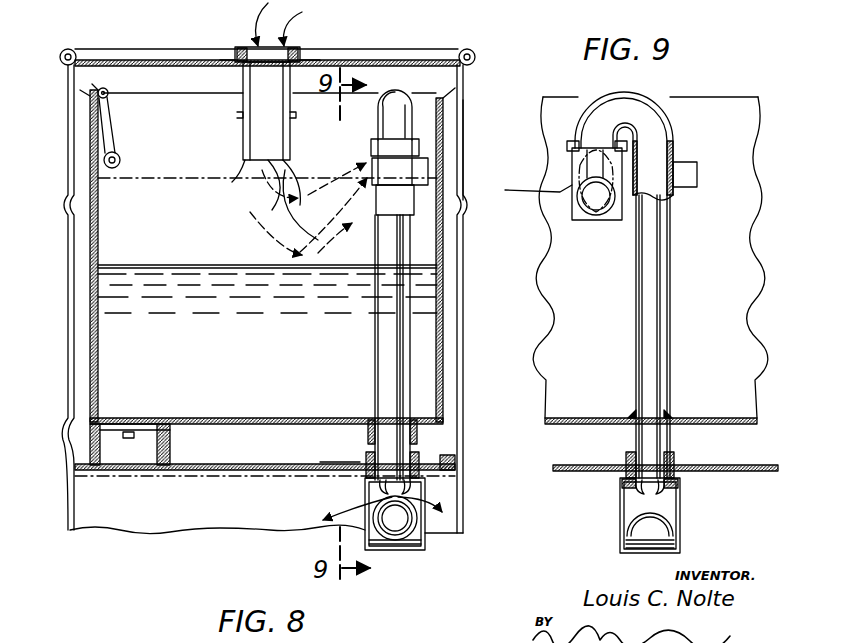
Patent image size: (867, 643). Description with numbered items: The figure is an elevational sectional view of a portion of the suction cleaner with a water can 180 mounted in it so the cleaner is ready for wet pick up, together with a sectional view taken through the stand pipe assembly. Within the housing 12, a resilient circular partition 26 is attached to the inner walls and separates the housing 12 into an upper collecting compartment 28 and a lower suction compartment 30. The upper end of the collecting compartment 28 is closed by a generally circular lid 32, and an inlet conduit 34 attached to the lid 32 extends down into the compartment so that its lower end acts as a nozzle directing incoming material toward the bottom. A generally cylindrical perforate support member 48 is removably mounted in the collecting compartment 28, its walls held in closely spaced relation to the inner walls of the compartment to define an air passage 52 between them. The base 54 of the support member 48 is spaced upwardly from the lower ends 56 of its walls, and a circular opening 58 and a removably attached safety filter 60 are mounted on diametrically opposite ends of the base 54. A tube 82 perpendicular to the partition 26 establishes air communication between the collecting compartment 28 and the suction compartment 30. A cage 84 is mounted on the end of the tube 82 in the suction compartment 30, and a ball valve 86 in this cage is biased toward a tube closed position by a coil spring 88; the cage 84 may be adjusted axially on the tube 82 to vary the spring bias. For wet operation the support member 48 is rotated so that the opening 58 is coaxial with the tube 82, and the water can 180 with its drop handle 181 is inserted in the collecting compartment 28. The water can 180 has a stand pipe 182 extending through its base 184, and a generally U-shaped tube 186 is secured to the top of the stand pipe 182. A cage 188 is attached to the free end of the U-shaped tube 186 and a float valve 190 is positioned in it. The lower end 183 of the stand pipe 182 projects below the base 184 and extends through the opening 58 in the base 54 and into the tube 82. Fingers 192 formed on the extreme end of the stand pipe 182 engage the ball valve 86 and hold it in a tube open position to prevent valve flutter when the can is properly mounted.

In FIG. 8, the outer tank wall 12 is at (466, 152).
In FIG. 8, the resilient circular partition 26 is at (225, 465).
In FIG. 9, the resilient circular partition 26 is at (580, 475).
In FIG. 8, the upper collecting compartment 28 is at (278, 448).
In FIG. 8, the lower suction compartment 30 is at (264, 508).
In FIG. 8, the lid 32 is at (150, 62).
In FIG. 8, the inlet conduit 34 is at (272, 89).
In FIG. 8, the perforate support member 48 is at (92, 266).
In FIG. 8, the air passage 52 is at (78, 336).
In FIG. 8, the base 54 is at (330, 450).
In FIG. 8, the lower ends 56 is at (90, 443).
In FIG. 8, the circular opening 58 is at (375, 435).
In FIG. 8, the safety filter 60 is at (171, 452).
In FIG. 8, the tube 82 is at (366, 455).
In FIG. 9, the tube 82 is at (628, 455).
In FIG. 8, the cage 84 is at (425, 520).
In FIG. 9, the cage 84 is at (680, 510).
In FIG. 8, the ball valve 86 is at (402, 527).
In FIG. 9, the ball valve 86 is at (648, 520).
In FIG. 8, the coil spring 88 is at (425, 545).
In FIG. 9, the coil spring 88 is at (680, 530).
In FIG. 8, the water can 180 is at (100, 224).
In FIG. 9, the water can 180 is at (724, 330).
In FIG. 8, the drop handle 181 is at (109, 112).
In FIG. 8, the stand pipe 182 is at (412, 240).
In FIG. 9, the stand pipe 182 is at (672, 271).
In FIG. 8, the lower end 183 is at (416, 446).
In FIG. 9, the lower end 183 is at (672, 440).
In FIG. 8, the base 184 is at (200, 420).
In FIG. 9, the base 184 is at (590, 420).
In FIG. 8, the U-shaped tube 186 is at (410, 118).
In FIG. 9, the U-shaped tube 186 is at (668, 122).
In FIG. 8, the cage 188 is at (428, 190).
In FIG. 9, the cage 188 is at (601, 177).
In FIG. 9, the float valve 190 is at (598, 220).
In FIG. 8, the fingers 192 is at (430, 488).
In FIG. 9, the fingers 192 is at (660, 490).